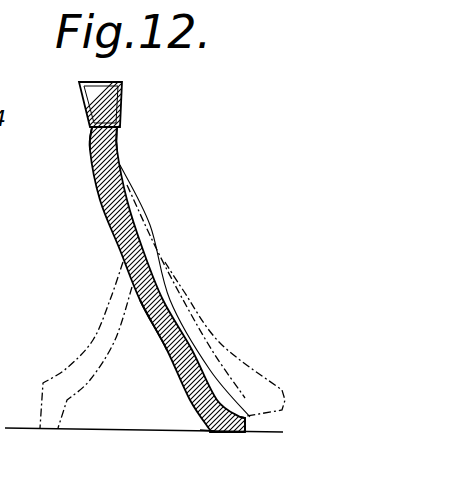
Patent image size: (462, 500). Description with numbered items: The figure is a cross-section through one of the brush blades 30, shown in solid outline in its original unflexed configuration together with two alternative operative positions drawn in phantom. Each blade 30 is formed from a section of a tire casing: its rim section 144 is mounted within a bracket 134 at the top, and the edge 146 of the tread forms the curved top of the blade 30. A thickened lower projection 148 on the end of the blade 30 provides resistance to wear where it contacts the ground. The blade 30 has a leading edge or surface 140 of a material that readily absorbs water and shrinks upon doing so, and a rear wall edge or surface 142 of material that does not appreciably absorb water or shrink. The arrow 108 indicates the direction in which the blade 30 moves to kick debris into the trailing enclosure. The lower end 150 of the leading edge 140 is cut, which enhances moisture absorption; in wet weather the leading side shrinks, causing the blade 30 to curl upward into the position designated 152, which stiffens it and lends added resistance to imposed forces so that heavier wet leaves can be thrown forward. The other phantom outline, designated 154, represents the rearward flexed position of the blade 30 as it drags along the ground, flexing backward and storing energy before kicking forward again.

The blade 30 is at (125, 267).
The arrow 108 is at (242, 275).
The bracket 134 is at (122, 104).
The leading edge 140 is at (165, 350).
The rear wall edge 142 is at (161, 341).
The rim section 144 is at (115, 133).
The edge of the tread 146 is at (230, 436).
The thickened lower projection 148 is at (208, 434).
The lower end 150 is at (250, 420).
The curled position 152 is at (262, 384).
The rearward flexed position 154 is at (66, 371).